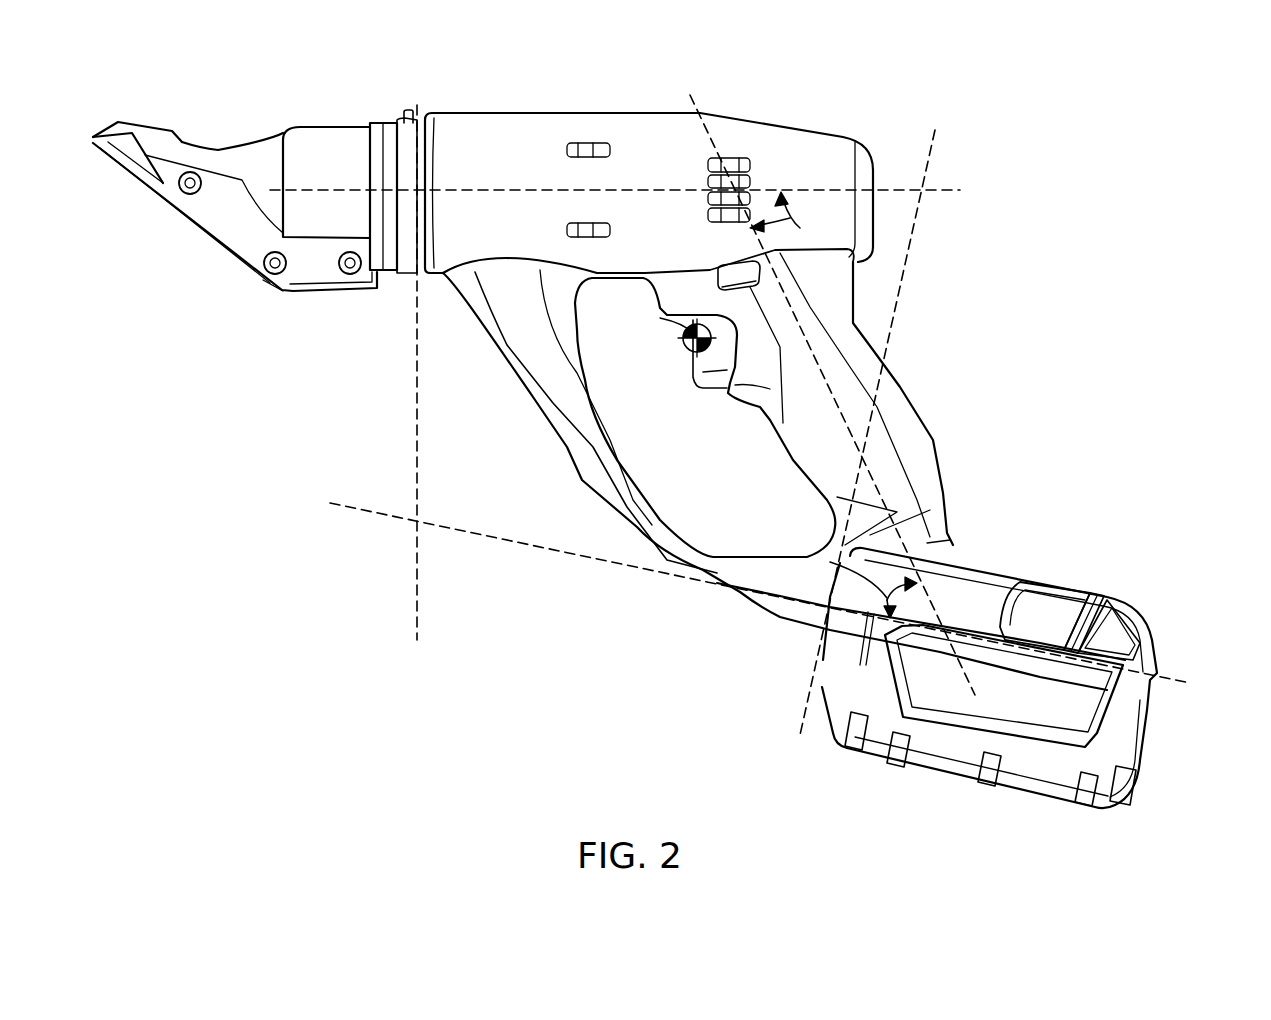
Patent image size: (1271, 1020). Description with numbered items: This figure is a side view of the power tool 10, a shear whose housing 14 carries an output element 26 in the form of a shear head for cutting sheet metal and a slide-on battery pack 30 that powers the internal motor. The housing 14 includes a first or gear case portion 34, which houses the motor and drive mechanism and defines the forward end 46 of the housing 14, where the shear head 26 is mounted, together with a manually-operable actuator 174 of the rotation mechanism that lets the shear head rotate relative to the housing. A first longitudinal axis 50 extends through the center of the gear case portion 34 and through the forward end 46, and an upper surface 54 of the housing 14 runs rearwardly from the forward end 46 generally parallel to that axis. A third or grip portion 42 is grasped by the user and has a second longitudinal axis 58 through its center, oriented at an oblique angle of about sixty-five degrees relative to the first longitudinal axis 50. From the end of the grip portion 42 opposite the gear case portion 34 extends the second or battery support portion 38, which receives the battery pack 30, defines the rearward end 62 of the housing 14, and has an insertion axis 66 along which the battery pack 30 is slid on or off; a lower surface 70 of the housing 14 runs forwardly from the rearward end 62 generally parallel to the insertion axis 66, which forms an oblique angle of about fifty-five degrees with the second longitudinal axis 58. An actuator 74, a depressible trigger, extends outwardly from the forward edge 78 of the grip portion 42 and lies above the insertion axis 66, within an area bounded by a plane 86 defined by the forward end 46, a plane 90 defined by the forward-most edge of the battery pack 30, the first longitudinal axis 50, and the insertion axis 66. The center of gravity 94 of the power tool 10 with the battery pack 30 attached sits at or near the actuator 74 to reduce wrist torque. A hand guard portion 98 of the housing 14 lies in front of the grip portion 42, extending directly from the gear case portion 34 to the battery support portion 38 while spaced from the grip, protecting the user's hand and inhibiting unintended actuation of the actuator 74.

The power tool 10 is at (877, 97).
The housing 14 is at (822, 145).
The output element 26 is at (282, 133).
The battery pack 30 is at (1130, 725).
The gear case portion 34 is at (548, 125).
The battery support portion 38 is at (1068, 590).
The grip portion 42 is at (893, 407).
The forward end 46 is at (412, 280).
The first longitudinal axis 50 is at (625, 188).
The upper surface 54 is at (493, 113).
The second longitudinal axis 58 is at (840, 415).
The rearward end 62 is at (1103, 603).
The insertion axis 66 is at (1170, 680).
The lower surface 70 is at (1025, 663).
The actuator 74 is at (693, 374).
The forward edge 78 is at (760, 410).
The plane 86 is at (417, 410).
The plane 90 is at (898, 300).
The center of gravity 94 is at (688, 344).
The hand guard portion 98 is at (545, 398).
The manually-operable actuator 174 is at (410, 115).